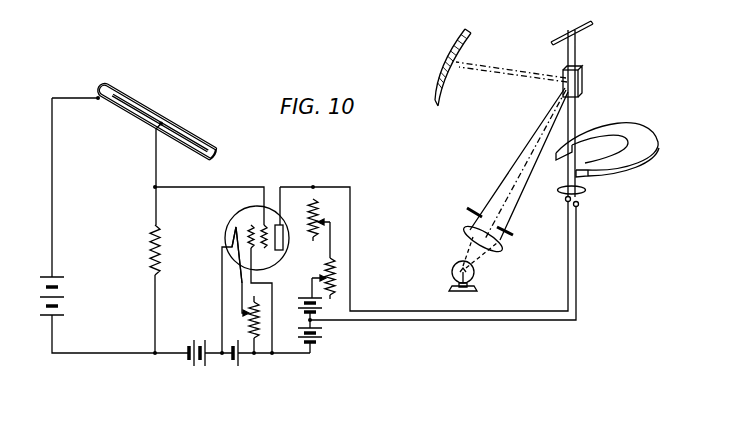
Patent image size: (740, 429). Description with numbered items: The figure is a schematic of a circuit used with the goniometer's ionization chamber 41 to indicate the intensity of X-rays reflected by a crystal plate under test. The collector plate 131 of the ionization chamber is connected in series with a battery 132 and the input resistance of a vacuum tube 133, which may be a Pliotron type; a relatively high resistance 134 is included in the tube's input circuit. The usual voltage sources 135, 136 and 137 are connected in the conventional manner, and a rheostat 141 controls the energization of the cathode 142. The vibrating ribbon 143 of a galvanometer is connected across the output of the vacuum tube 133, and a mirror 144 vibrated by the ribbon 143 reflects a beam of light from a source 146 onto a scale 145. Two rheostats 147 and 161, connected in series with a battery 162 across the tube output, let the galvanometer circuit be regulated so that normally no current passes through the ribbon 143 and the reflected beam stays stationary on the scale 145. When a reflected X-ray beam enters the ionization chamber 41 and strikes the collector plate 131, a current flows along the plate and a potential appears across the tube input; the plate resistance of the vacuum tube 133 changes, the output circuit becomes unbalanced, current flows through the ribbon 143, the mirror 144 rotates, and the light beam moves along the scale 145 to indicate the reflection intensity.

The ionization chamber 41 is at (217, 148).
The collector plate 131 is at (178, 133).
The battery 132 is at (62, 297).
The vacuum tube 133 is at (252, 207).
The high resistance 134 is at (148, 245).
The voltage source 135 is at (193, 362).
The voltage source 136 is at (231, 360).
The voltage source 137 is at (320, 336).
The rheostat 141 is at (262, 315).
The cathode 142 is at (228, 236).
The vibrating ribbon 143 is at (583, 191).
The mirror 144 is at (580, 80).
The scale 145 is at (468, 53).
The light source 146 is at (475, 277).
The rheostat 147 is at (316, 198).
The rheostat 161 is at (340, 290).
The battery 162 is at (299, 306).